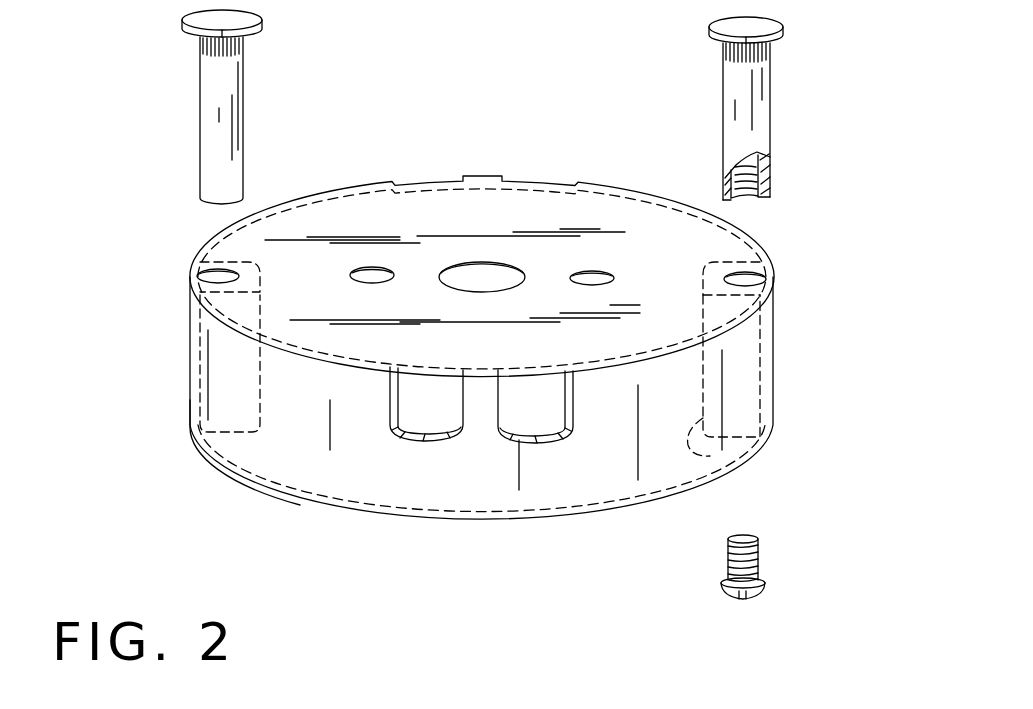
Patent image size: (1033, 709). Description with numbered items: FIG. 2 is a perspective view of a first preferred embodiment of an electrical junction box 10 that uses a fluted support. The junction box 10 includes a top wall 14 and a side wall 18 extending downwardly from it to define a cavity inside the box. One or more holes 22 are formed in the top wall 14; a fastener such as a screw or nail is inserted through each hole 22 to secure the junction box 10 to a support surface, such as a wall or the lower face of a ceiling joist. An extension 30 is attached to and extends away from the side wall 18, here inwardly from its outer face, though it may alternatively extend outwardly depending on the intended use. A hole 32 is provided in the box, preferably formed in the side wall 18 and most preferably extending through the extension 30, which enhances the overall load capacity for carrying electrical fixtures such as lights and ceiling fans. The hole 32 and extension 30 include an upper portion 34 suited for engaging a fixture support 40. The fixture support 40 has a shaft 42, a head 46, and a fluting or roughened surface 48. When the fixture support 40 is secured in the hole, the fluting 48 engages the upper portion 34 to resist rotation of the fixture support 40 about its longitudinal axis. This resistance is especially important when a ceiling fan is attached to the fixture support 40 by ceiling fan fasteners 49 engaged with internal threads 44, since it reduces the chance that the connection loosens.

The junction box 10 is at (800, 360).
The top wall 14 is at (660, 300).
The side wall 18 is at (258, 448).
The hole 22 is at (368, 268).
The extension 30 is at (710, 456).
The hole 32 is at (195, 271).
The upper edge/portion 34 is at (735, 268).
The fixture support 40 is at (759, 116).
The shaft 42 is at (732, 127).
The internal threads 44 is at (753, 198).
The head 46 is at (768, 25).
The fluting 48 is at (725, 58).
The ceiling fan fasteners 49 is at (758, 568).